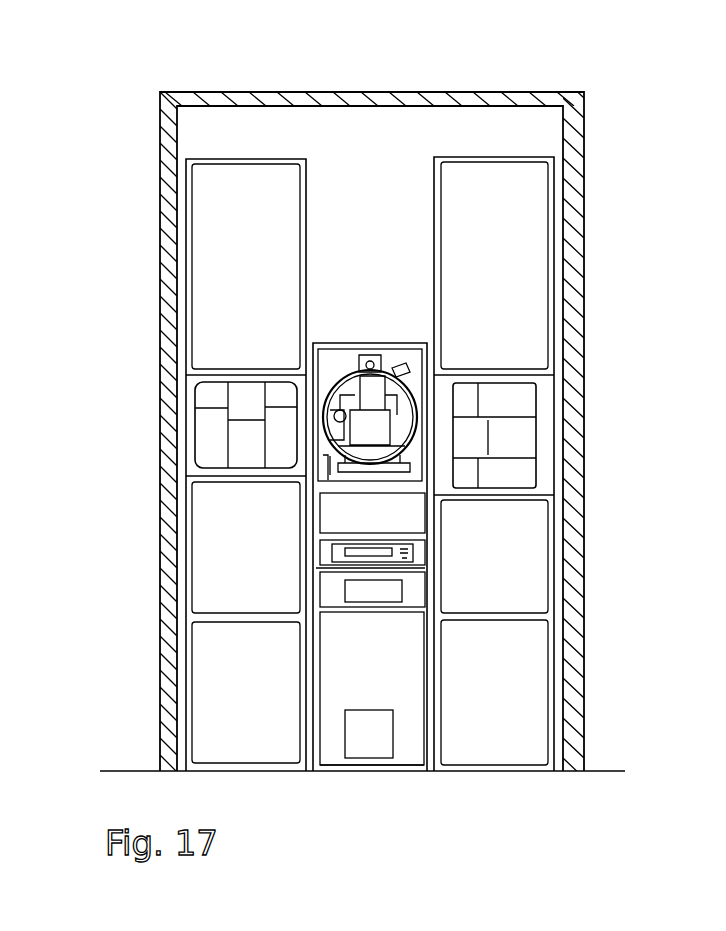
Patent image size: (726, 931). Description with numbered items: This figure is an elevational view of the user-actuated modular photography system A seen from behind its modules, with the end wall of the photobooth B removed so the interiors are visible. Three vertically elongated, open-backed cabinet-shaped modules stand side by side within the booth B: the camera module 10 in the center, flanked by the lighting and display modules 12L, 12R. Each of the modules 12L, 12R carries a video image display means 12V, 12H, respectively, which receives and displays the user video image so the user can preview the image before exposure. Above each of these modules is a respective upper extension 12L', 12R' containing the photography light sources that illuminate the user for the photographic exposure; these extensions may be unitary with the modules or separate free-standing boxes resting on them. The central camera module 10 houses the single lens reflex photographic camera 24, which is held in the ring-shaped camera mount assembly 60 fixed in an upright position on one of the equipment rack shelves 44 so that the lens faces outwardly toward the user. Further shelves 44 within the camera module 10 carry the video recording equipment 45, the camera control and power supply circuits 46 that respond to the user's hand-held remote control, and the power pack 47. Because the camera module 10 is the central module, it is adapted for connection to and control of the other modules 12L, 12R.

The photobooth B is at (253, 90).
The user-actuated modular photography system A is at (571, 265).
The upper extension 12R' is at (174, 266).
The upper extension 12L' is at (571, 265).
The video image display means 12H is at (210, 398).
The video image display means 12V is at (520, 398).
The lighting and display module 12R is at (174, 547).
The lighting and display module 12L is at (567, 556).
The camera mount assembly 60 is at (370, 386).
The photographic camera 24 is at (386, 392).
The equipment rack shelves 44 is at (334, 491).
The video recording equipment 45 is at (413, 550).
The camera control and power supply circuits 46 is at (362, 598).
The power pack 47 is at (370, 728).
The camera module 10 is at (335, 736).